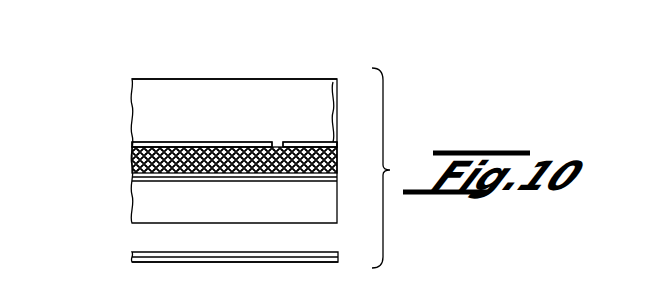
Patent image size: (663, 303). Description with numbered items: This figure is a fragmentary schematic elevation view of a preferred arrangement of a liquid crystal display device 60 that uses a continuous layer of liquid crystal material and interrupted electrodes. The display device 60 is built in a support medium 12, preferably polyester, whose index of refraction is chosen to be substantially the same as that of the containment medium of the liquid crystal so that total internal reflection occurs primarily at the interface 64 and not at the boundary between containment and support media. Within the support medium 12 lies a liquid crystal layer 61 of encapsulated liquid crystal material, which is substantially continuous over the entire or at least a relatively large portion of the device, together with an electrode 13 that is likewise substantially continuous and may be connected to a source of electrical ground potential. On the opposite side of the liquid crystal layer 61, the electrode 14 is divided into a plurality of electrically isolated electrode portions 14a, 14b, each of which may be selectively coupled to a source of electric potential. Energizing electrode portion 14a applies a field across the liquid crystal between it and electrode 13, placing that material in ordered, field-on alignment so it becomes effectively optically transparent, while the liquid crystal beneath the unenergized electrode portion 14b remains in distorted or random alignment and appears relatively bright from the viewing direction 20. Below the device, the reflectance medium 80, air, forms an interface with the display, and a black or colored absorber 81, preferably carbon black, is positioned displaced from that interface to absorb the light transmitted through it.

The display device 60 is at (322, 72).
The interface 64 is at (161, 79).
The viewing direction 20 is at (224, 41).
The support medium 12 is at (331, 93).
The electrode 14 is at (333, 127).
The electrode portion 14a is at (197, 140).
The electrode portion 14b is at (309, 140).
The liquid crystal layer 61 is at (132, 156).
The electrode 13 is at (307, 179).
The reflectance medium 80 is at (312, 239).
The absorber 81 is at (340, 262).